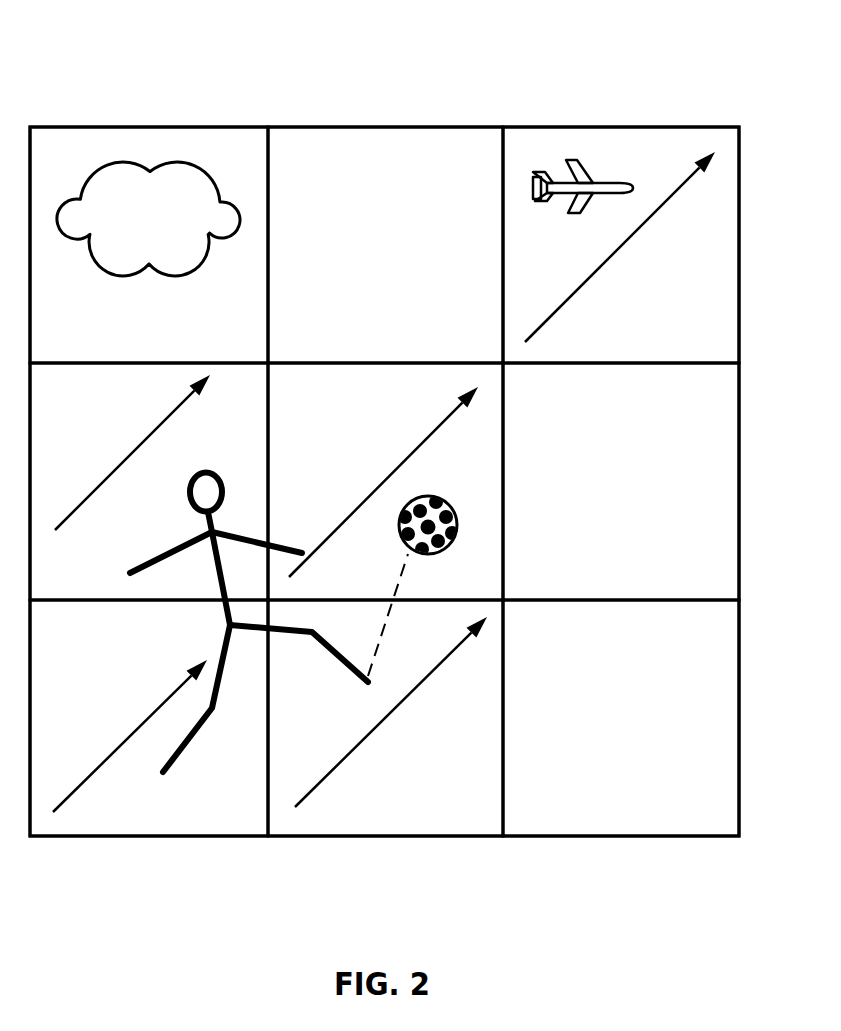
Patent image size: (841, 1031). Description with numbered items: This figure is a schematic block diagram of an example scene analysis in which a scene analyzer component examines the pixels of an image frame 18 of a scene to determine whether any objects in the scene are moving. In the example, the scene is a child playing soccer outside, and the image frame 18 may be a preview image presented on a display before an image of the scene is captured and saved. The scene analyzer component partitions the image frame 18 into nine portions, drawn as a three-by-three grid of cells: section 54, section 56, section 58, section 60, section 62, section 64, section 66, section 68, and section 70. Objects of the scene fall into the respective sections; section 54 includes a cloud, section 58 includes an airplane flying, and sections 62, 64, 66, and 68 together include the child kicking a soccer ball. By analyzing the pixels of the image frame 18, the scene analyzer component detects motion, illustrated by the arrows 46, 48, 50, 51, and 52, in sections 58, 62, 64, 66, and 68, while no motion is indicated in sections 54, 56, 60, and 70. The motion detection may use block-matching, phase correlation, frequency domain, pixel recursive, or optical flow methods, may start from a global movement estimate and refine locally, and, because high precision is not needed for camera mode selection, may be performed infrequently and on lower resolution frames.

The image frame 18 is at (102, 50).
The arrow 46 is at (615, 252).
The arrow 48 is at (440, 423).
The arrow 50 is at (395, 708).
The arrow 51 is at (108, 762).
The arrow 52 is at (110, 478).
The section 54 is at (260, 352).
The section 56 is at (494, 352).
The section 58 is at (730, 352).
The section 60 is at (730, 588).
The section 62 is at (496, 588).
The section 64 is at (258, 588).
The section 66 is at (258, 824).
The section 68 is at (496, 824).
The section 70 is at (730, 824).